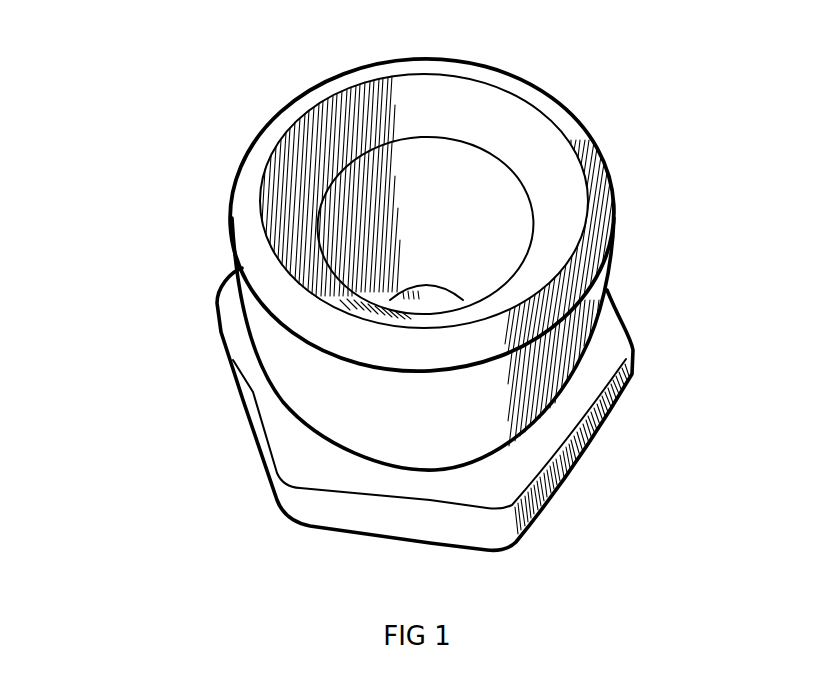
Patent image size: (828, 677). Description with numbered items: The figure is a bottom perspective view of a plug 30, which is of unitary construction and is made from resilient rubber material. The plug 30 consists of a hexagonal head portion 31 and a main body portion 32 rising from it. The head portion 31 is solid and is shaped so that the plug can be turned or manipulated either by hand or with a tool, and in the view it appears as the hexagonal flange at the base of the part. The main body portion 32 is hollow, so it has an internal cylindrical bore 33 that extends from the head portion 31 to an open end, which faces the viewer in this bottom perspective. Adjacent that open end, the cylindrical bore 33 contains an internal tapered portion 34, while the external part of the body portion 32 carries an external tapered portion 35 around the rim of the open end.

The plug 30 is at (158, 152).
The hexagonal head portion 31 is at (212, 272).
The main body portion 32 is at (600, 307).
The internal cylindrical bore 33 is at (343, 197).
The internal tapered portion 34 is at (500, 98).
The external tapered portion 35 is at (566, 100).